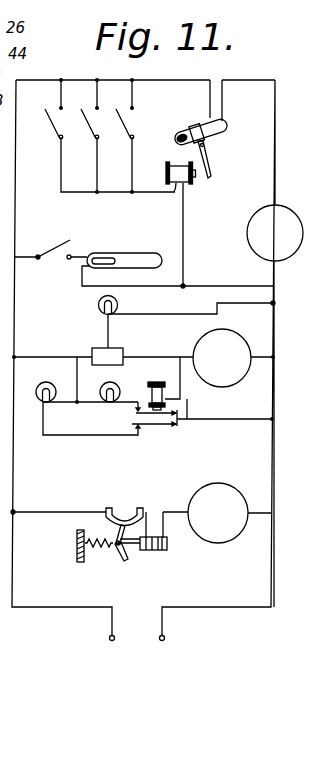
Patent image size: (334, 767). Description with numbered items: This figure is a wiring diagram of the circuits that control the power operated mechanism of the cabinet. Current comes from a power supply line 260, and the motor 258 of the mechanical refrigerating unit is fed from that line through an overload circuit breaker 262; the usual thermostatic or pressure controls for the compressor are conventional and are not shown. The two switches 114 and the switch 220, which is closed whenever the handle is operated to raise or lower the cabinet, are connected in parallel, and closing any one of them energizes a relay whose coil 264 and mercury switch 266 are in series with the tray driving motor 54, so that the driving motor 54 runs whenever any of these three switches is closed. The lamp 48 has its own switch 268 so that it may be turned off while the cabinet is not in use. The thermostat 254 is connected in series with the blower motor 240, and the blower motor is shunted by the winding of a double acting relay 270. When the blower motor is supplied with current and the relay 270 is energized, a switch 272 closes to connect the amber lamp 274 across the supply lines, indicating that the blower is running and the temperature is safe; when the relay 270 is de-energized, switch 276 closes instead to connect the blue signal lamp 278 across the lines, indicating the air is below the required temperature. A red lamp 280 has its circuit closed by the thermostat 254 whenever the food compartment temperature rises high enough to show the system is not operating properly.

The lamp 48 is at (135, 253).
The tray driving motor 54 is at (259, 255).
The switches 114 is at (95, 128).
The switch 220 is at (56, 126).
The blower motor 240 is at (234, 328).
The thermostat 254 is at (115, 351).
The motor 258 is at (217, 544).
The power supply line 260 is at (114, 622).
The overload circuit breaker 262 is at (133, 548).
The solenoid coil 264 is at (185, 200).
The mercury switch 266 is at (217, 131).
The switch 268 is at (45, 250).
The double acting relay 270 is at (150, 383).
The switch 272 is at (140, 413).
The lamp 274 is at (107, 384).
The switch 276 is at (156, 427).
The signal lamp 278 is at (50, 379).
The lamp 280 is at (99, 308).